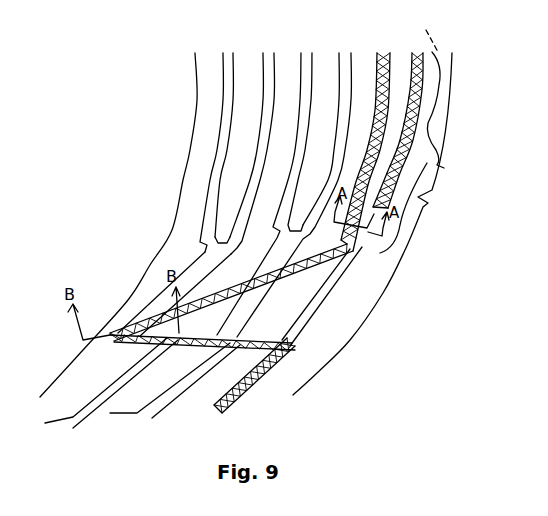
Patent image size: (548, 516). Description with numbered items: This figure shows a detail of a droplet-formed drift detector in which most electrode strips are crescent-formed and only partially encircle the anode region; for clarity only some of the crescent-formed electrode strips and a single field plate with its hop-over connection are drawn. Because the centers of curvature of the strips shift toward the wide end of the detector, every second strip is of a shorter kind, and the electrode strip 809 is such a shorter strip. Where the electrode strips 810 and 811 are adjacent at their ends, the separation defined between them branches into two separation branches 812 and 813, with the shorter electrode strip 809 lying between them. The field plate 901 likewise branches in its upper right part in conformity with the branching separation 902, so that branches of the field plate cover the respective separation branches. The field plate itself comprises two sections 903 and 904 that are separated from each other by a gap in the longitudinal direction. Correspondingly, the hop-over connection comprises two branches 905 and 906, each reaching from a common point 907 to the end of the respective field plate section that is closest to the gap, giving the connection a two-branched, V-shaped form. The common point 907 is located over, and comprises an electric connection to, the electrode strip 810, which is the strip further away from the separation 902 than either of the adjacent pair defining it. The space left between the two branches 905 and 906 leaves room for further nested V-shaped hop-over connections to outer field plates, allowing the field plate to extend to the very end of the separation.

The electrode strip 809 is at (252, 73).
The electrode strip 810 is at (68, 407).
The electrode strip 811 is at (114, 410).
The separation branch 812 is at (231, 86).
The separation branch 813 is at (267, 84).
The field plate 901 is at (352, 251).
The branching separation 902 is at (320, 302).
The field plate section 903 is at (386, 223).
The field plate section 904 is at (222, 412).
The hop-over connection branch 905 is at (231, 289).
The hop-over connection branch 906 is at (198, 385).
The common point 907 is at (140, 320).